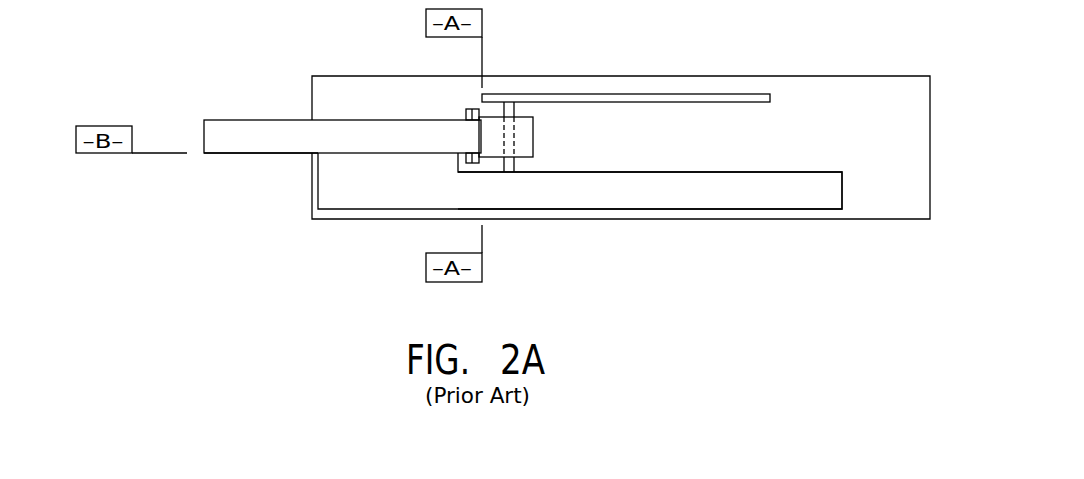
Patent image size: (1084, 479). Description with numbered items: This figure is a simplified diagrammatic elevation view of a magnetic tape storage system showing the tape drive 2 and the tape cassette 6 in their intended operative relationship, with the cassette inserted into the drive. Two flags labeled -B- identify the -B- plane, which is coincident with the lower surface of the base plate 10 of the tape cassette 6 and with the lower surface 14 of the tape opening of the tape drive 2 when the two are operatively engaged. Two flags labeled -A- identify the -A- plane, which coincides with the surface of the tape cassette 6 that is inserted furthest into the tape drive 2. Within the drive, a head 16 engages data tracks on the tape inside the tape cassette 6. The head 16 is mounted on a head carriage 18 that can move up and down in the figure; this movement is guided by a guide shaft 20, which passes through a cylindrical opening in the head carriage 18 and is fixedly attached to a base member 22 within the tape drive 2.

The tape drive 2 is at (802, 76).
The tape cassette 6 is at (277, 121).
The base plate 10 is at (266, 154).
The lower surface 14 is at (372, 154).
The head 16 is at (465, 110).
The head carriage 18 is at (522, 135).
The guide shaft 20 is at (516, 111).
The base member 22 is at (700, 200).